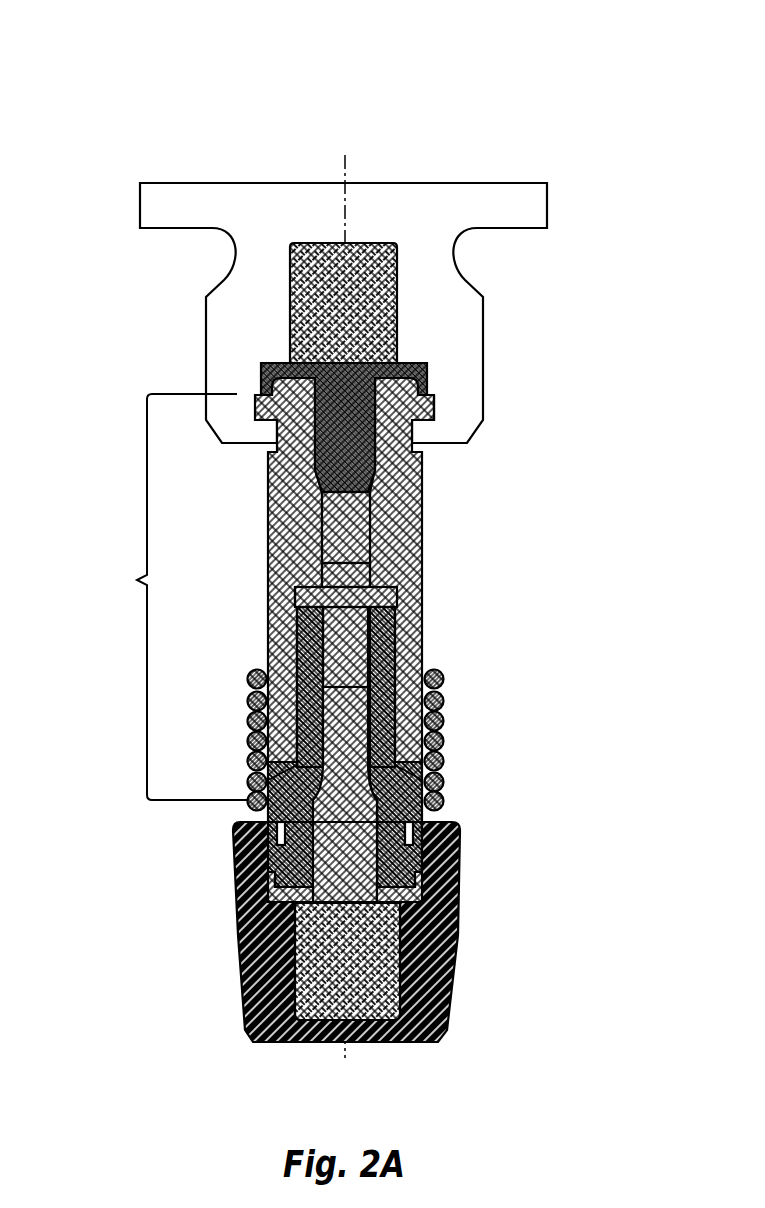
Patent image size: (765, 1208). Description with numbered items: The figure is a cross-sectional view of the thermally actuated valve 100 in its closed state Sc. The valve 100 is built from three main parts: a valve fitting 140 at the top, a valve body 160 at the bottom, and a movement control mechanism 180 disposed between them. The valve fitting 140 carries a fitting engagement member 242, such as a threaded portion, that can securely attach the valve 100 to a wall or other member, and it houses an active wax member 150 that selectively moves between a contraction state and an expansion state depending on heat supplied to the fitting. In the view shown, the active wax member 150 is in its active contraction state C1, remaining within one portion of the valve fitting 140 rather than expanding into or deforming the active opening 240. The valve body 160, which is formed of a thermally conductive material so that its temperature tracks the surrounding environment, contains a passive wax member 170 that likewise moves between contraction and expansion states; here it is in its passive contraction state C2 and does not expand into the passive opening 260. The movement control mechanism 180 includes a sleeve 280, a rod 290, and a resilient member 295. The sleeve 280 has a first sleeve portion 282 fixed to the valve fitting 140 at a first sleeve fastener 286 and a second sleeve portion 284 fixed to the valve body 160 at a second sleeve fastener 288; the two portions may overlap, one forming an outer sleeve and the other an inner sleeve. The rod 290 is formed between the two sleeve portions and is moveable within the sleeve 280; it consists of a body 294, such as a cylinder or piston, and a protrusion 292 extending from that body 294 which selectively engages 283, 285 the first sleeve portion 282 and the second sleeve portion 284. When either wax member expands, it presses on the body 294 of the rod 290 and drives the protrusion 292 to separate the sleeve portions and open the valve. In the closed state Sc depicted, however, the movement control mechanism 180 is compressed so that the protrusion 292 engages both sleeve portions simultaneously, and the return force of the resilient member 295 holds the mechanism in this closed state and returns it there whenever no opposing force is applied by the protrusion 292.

The thermally actuated valve 100 is at (383, 36).
The valve fitting 140 is at (386, 283).
The active contraction state C1 is at (410, 241).
The fitting engagement member 242 is at (460, 250).
The active wax member 150 is at (380, 337).
The active opening 240 is at (357, 383).
The first sleeve fastener 286 is at (434, 408).
The first sleeve portion 282 is at (443, 559).
The movement control mechanism 180 is at (397, 605).
The engagement of protrusion with first sleeve portion 283 is at (325, 562).
The rod 290 is at (397, 616).
The engagement of protrusion with second sleeve portion 285 is at (400, 608).
The protrusion 292 is at (293, 598).
The body of the rod 294 is at (300, 655).
The sleeve 280 is at (397, 716).
The resilient member 295 is at (446, 727).
The second sleeve portion 284 is at (445, 780).
The second sleeve fastener 288 is at (425, 842).
The passive opening 260 is at (352, 873).
The passive wax member 170 is at (378, 943).
The passive contraction state C2 is at (414, 998).
The valve body 160 is at (452, 1013).
The closed state Sc is at (173, 597).